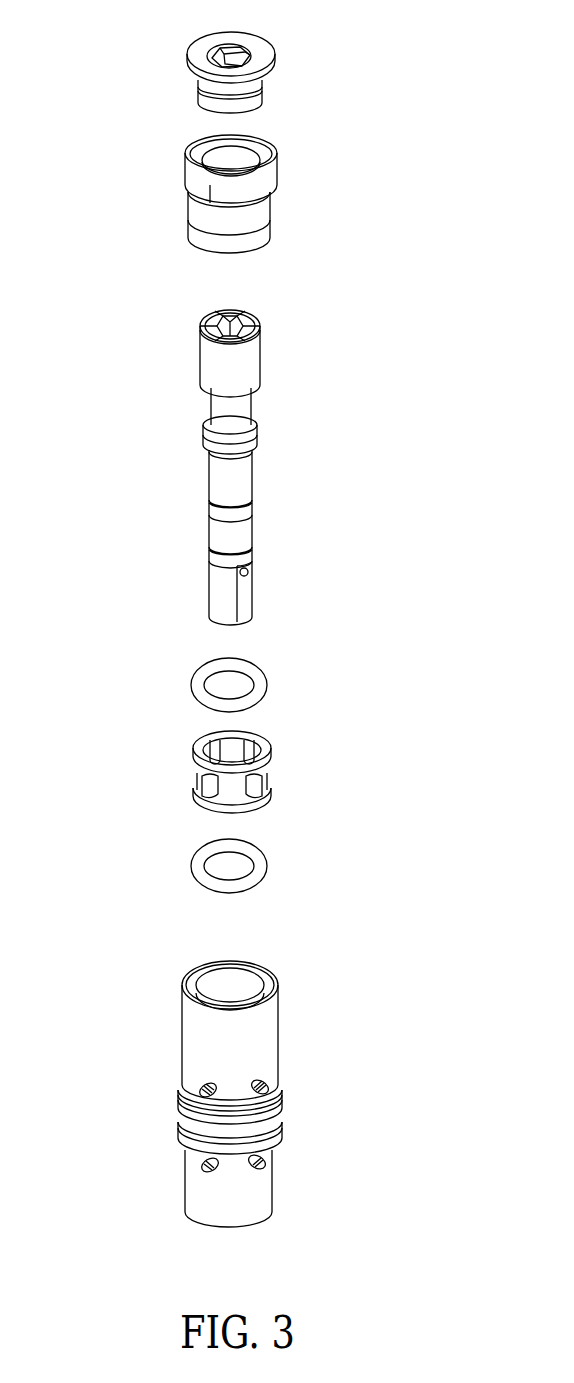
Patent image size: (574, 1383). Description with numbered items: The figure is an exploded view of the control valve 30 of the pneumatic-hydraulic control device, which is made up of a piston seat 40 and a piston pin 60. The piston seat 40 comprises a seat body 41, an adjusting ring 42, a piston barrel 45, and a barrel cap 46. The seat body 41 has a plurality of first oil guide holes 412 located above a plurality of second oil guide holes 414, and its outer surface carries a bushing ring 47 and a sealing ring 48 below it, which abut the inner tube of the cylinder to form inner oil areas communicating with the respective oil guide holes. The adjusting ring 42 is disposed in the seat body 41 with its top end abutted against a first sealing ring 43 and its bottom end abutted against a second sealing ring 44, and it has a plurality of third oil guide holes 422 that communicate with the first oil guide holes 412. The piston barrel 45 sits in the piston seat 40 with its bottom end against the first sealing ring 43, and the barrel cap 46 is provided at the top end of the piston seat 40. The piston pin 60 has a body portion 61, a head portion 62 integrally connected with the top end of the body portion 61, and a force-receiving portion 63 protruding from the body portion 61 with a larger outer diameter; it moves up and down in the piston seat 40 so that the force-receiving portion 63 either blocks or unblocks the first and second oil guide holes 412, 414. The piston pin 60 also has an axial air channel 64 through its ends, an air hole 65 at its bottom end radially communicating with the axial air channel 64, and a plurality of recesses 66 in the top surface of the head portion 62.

The control valve 30 is at (355, 92).
The piston seat 40 is at (73, 235).
The seat body 41 is at (173, 963).
The first oil guide holes 412 is at (265, 1085).
The second oil guide holes 414 is at (262, 1160).
The adjusting ring 42 is at (170, 772).
The third oil guide holes 422 is at (262, 780).
The first sealing ring 43 is at (266, 686).
The second sealing ring 44 is at (262, 866).
The piston barrel 45 is at (181, 240).
The barrel cap 46 is at (178, 92).
The bushing ring 47 is at (190, 1112).
The sealing ring 48 is at (182, 1137).
The piston pin 60 is at (350, 348).
The body portion 61 is at (247, 480).
The head portion 62 is at (248, 355).
The force-receiving portion 63 is at (250, 437).
The axial air channel 64 is at (233, 323).
The air hole 65 is at (248, 574).
The recesses 66 is at (253, 314).